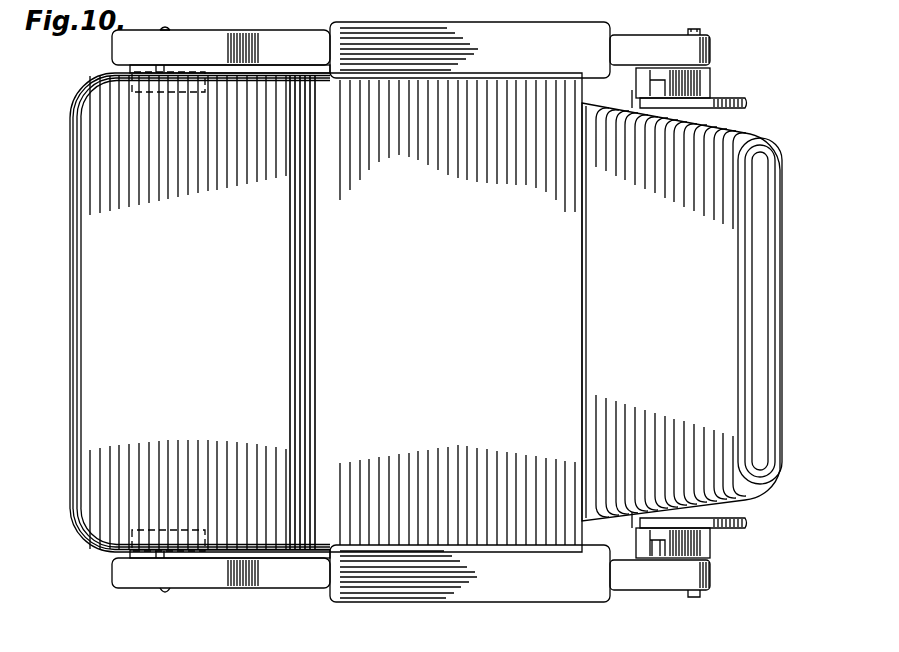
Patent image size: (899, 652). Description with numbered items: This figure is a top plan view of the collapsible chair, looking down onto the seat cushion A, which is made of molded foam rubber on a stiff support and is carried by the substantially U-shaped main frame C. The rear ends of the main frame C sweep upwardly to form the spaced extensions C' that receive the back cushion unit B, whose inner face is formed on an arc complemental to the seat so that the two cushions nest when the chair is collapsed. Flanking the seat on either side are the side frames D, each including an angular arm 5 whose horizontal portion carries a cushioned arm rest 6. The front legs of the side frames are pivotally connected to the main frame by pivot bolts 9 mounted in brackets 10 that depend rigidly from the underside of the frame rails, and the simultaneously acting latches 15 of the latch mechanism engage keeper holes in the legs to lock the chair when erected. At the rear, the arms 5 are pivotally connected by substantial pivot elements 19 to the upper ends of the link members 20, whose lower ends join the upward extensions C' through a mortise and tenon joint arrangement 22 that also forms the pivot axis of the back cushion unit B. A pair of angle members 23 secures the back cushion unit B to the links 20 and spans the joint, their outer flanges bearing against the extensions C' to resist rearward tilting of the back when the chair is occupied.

The angular arm 5 is at (283, 50).
The cushioned arm rest 6 is at (465, 66).
The pivot bolt 9 is at (170, 30).
The bracket 10 is at (198, 80).
The latch 15 is at (160, 64).
The pivot element 19 is at (700, 32).
The link member 20 is at (695, 82).
The mortise and tenon joint arrangement 22 is at (661, 542).
The angle member 23 is at (720, 100).
The seat cushion A is at (432, 312).
The back cushion unit B is at (578, 254).
The main frame C is at (632, 95).
The side frame D is at (110, 578).